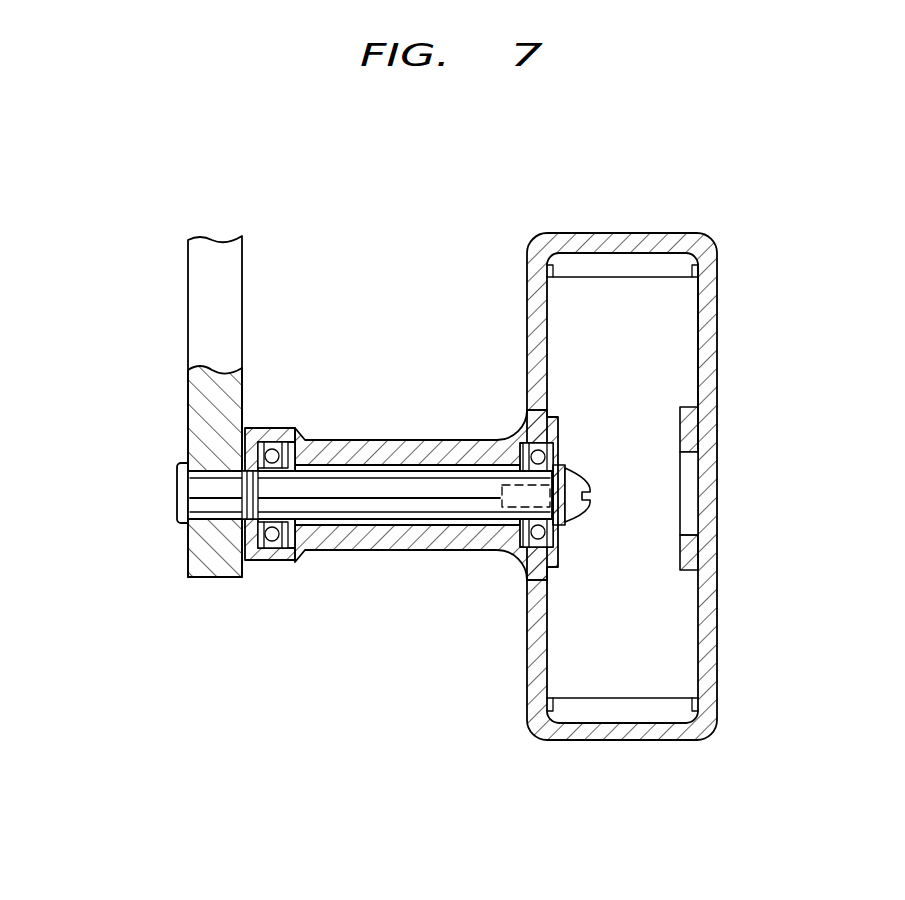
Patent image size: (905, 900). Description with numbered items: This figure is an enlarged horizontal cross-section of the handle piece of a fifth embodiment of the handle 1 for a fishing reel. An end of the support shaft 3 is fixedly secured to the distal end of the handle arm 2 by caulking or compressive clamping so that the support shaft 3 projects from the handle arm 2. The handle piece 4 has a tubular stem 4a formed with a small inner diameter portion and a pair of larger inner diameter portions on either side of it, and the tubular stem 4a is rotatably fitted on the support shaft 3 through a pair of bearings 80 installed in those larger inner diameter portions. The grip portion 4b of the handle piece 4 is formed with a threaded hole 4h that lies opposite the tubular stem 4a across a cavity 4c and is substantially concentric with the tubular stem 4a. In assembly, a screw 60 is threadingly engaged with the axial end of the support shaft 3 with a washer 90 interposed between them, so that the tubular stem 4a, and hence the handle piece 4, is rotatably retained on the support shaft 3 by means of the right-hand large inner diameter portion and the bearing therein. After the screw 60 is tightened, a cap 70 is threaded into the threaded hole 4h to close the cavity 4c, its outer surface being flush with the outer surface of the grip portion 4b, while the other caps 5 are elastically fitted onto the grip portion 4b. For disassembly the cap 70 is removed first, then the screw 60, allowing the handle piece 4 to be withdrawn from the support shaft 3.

The handle 1 is at (165, 262).
The handle arm 2 is at (213, 347).
The support shaft 3 is at (175, 500).
The handle piece 4 is at (403, 440).
The tubular stem 4a is at (324, 436).
The grip portion 4b is at (715, 343).
The cavity 4c is at (675, 315).
The threaded hole 4h is at (715, 540).
The caps 5 is at (712, 243).
The screw 60 is at (587, 518).
The cap 70 is at (713, 447).
The bearings 80 is at (278, 562).
The washer 90 is at (563, 530).